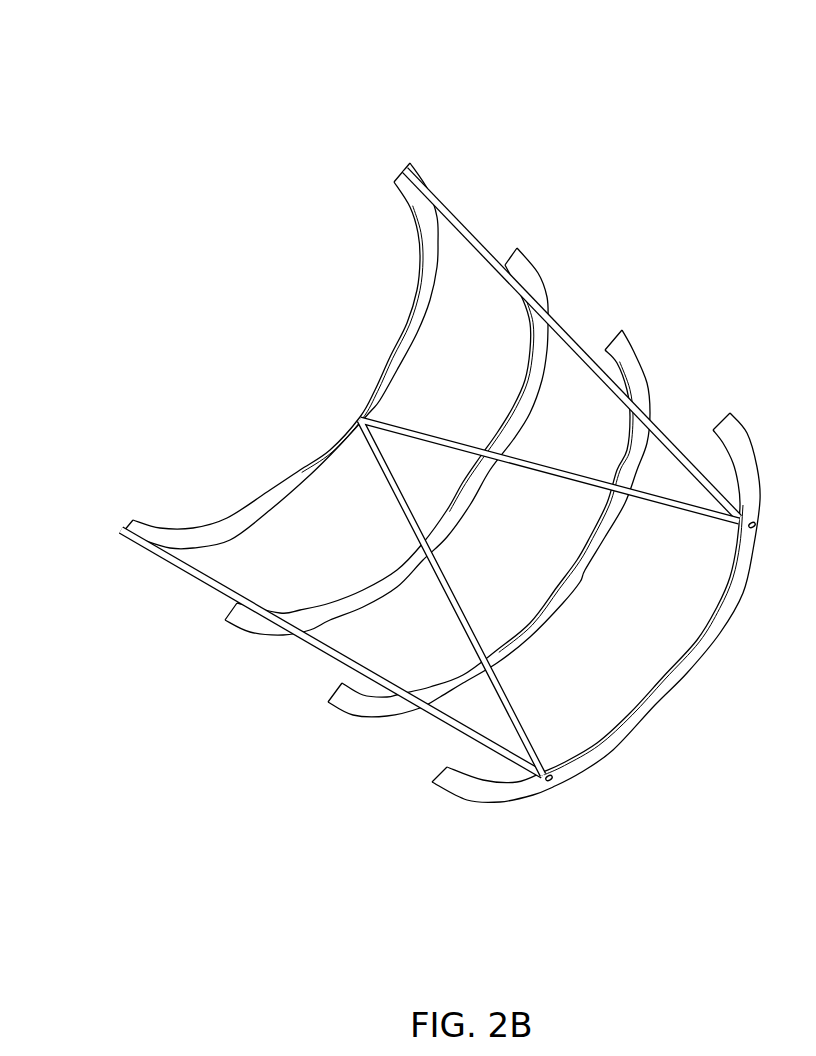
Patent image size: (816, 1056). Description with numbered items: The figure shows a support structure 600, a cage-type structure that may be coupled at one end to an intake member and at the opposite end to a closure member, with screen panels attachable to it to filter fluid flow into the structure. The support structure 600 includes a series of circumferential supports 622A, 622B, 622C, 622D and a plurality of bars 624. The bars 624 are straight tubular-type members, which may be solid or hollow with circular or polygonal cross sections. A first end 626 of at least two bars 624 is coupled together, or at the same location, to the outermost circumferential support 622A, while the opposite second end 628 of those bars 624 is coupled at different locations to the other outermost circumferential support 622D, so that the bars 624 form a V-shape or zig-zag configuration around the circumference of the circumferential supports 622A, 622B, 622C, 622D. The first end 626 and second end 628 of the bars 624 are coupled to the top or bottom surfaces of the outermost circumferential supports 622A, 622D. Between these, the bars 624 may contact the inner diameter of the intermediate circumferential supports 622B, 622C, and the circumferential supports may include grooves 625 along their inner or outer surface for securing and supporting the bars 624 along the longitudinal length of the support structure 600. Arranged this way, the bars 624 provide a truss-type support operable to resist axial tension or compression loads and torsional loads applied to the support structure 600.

The support structure 600 is at (599, 72).
The circumferential support 622A is at (223, 517).
The circumferential support 622B is at (233, 627).
The circumferential support 622C is at (543, 625).
The circumferential support 622D is at (453, 800).
The bars 624 is at (177, 566).
The grooves 625 is at (417, 693).
The first end 626 is at (118, 527).
The second end 628 is at (553, 782).